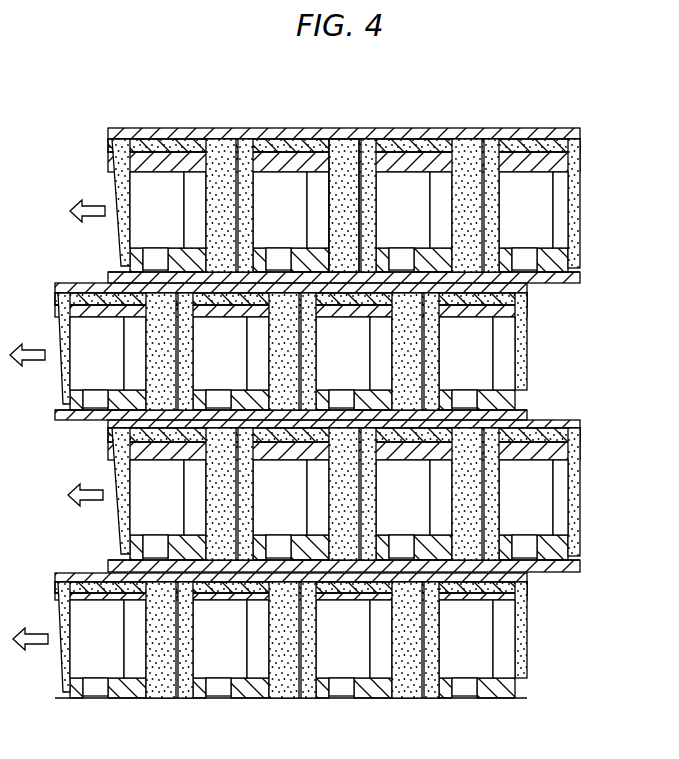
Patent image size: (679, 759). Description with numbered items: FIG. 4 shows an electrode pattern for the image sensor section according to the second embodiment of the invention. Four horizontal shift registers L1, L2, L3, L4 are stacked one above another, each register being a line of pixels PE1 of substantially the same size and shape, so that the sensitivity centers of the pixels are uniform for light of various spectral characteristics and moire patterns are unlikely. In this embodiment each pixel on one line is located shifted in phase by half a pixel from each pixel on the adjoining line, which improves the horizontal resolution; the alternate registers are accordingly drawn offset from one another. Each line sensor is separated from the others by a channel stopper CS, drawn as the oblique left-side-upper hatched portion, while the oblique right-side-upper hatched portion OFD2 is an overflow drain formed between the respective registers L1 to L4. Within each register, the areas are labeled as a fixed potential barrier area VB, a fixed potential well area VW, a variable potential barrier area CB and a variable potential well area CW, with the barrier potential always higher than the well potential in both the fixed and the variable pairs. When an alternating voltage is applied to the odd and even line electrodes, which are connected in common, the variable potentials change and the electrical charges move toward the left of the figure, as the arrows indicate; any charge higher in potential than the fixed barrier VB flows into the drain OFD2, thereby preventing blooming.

The fixed potential well area VW is at (311, 425).
The fixed potential barrier area VB is at (187, 150).
The variable potential well area CW is at (213, 172).
The variable potential barrier area CB is at (245, 172).
The pixel PE1 is at (350, 167).
The channel stopper CS is at (339, 427).
The overflow drain OFD2 is at (352, 359).
The horizontal shift register L1 is at (361, 211).
The horizontal shift register L2 is at (324, 356).
The horizontal shift register L3 is at (360, 500).
The horizontal shift register L4 is at (307, 640).